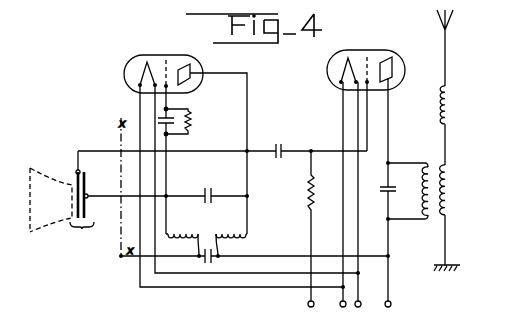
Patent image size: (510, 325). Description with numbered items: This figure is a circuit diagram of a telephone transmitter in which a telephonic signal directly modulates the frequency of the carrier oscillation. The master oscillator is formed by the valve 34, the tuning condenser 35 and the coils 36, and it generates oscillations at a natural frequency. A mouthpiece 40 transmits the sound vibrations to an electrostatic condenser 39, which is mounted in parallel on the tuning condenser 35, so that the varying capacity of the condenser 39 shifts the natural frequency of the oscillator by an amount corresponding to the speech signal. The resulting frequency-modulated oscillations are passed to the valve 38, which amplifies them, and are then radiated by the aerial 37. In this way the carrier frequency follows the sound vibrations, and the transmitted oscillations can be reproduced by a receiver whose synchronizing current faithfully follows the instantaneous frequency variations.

The master oscillator valve 34 is at (180, 57).
The tuning condenser 35 is at (211, 194).
The oscillator coils 36 is at (184, 231).
The aerial 37 is at (447, 61).
The amplifying valve 38 is at (386, 53).
The electrostatic condenser 39 is at (82, 198).
The mouthpiece 40 is at (54, 186).